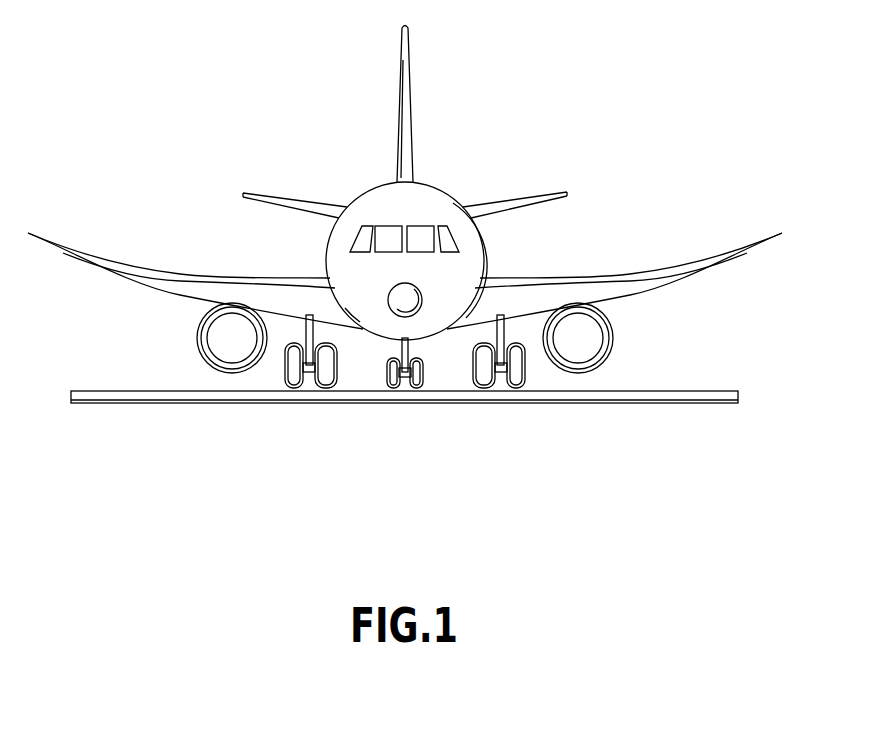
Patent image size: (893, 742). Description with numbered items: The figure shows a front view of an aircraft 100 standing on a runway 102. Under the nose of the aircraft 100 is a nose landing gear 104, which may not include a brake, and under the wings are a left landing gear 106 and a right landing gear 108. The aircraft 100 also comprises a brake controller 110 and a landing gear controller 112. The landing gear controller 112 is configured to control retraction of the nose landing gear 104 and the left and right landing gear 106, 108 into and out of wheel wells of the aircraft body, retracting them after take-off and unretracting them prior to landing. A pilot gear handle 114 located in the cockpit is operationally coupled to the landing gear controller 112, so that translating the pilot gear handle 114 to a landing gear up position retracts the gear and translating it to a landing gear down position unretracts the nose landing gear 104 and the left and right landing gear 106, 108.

The aircraft 100 is at (268, 105).
The runway 102 is at (728, 389).
The nose landing gear 104 is at (423, 378).
The left landing gear 106 is at (525, 378).
The right landing gear 108 is at (283, 386).
The brake controller 110 is at (462, 281).
The landing gear controller 112 is at (357, 282).
The pilot gear handle 114 is at (390, 237).